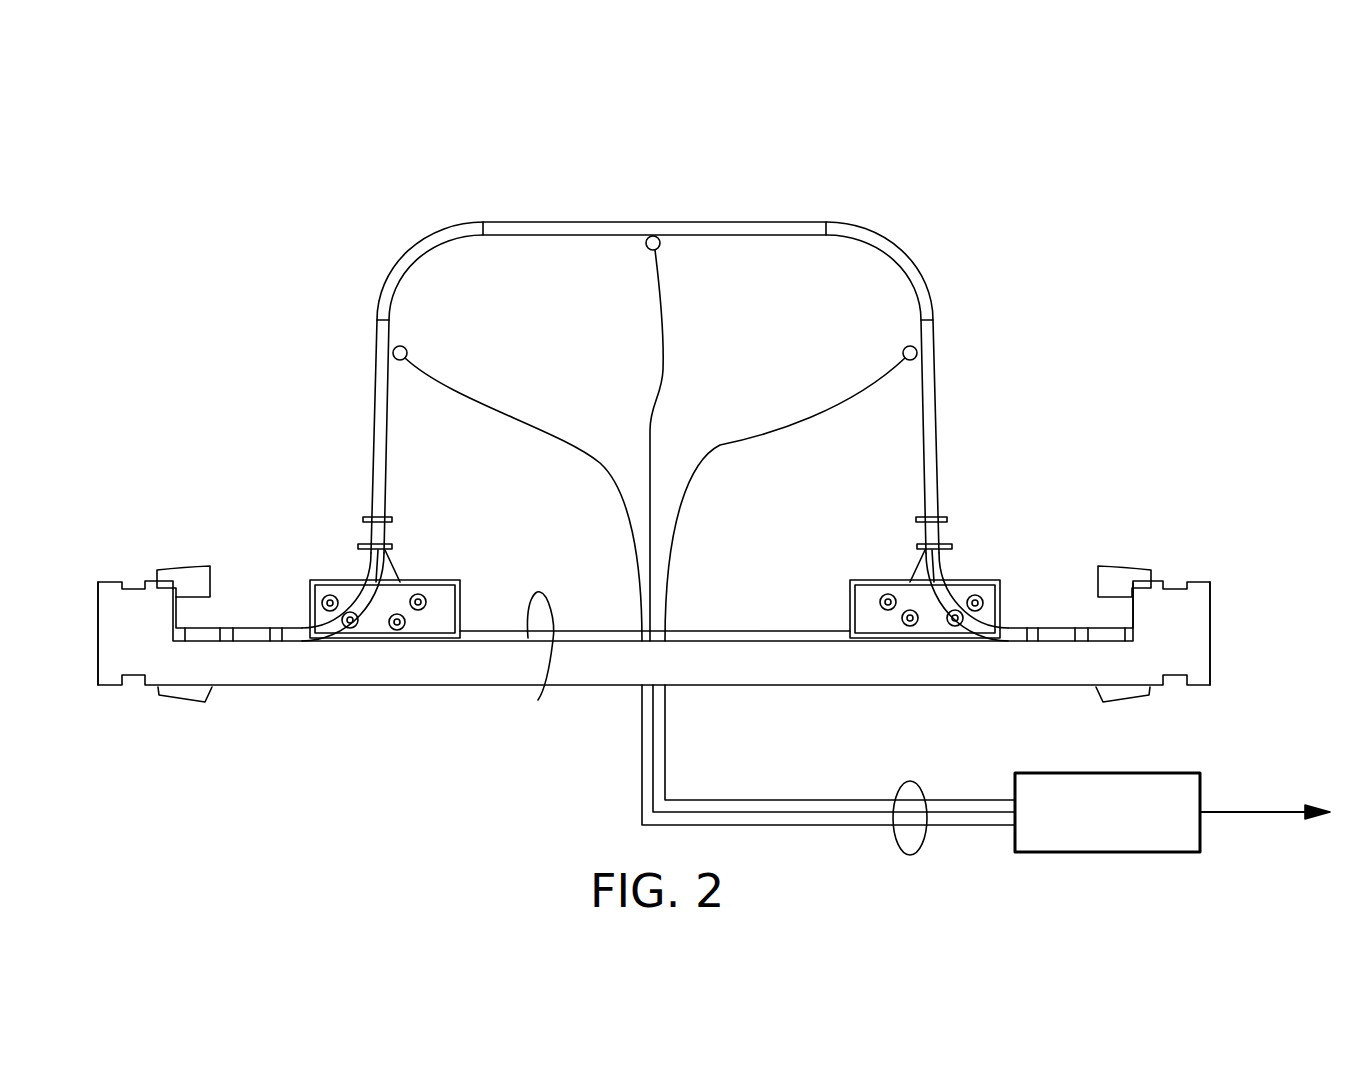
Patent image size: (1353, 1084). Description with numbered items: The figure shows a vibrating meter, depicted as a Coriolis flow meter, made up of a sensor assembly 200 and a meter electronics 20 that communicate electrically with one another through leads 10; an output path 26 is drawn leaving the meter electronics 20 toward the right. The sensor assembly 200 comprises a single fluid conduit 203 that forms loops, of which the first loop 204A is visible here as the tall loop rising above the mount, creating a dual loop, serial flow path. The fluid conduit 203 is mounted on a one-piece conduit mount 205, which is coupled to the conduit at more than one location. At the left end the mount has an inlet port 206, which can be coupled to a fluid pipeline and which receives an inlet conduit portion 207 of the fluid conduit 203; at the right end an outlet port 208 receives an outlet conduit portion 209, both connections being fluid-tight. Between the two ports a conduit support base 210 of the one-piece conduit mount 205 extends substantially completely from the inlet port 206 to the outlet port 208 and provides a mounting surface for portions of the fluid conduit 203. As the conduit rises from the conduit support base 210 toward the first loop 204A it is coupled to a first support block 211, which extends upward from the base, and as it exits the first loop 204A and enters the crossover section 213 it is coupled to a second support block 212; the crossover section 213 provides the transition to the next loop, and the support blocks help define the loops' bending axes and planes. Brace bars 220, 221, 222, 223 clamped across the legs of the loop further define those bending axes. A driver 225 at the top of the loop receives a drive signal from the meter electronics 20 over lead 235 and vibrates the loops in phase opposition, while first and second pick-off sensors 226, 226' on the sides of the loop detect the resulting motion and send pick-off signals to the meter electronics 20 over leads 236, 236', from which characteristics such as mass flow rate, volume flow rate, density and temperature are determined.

The sensor assembly 200 is at (268, 196).
The fluid conduit 203 is at (708, 416).
The first loop 204A is at (521, 252).
The one-piece conduit mount 205 is at (348, 700).
The inlet port 206 is at (103, 687).
The inlet conduit portion 207 is at (249, 630).
The outlet port 208 is at (1212, 605).
The outlet conduit portion 209 is at (1057, 625).
The conduit support base 210 is at (538, 700).
The first support block 211 is at (437, 598).
The second support block 212 is at (1000, 592).
The crossover section 213 is at (745, 631).
The brace bar 220 is at (358, 549).
The brace bar 221 is at (952, 547).
The brace bar 222 is at (364, 518).
The brace bar 223 is at (948, 518).
The driver 225 is at (660, 250).
The first pick-off sensor 226 is at (415, 327).
The second pick-off sensor 226' is at (888, 324).
The lead 235 is at (664, 342).
The lead 236 is at (710, 591).
The lead 236' is at (840, 579).
The leads 10 is at (915, 857).
The meter electronics 20 is at (1160, 855).
The output path 26 is at (1258, 808).